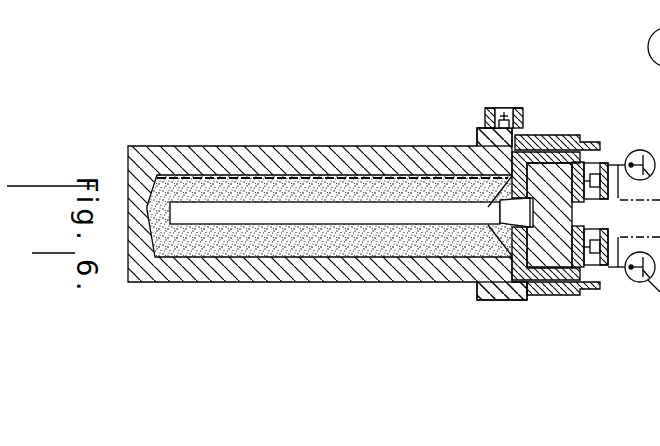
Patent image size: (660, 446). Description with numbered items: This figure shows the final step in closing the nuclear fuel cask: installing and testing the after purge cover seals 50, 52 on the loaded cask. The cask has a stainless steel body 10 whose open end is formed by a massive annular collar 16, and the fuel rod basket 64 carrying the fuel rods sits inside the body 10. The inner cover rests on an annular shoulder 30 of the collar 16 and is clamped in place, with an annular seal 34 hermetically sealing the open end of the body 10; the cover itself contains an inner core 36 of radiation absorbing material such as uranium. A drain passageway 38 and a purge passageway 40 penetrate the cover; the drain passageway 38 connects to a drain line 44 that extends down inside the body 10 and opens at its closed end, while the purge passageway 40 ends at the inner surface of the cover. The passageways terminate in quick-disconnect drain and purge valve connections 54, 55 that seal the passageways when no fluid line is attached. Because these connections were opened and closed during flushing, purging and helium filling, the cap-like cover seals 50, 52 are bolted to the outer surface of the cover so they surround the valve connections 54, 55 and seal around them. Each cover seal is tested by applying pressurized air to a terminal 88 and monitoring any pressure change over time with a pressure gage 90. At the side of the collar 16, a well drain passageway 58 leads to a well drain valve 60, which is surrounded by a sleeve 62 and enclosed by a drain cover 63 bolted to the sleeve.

The body 10 is at (507, 322).
The collar 16 is at (482, 300).
The shoulder 30 is at (510, 140).
The annular seal 34 is at (489, 216).
The inner core 36 is at (501, 217).
The drain passageway 38 is at (576, 151).
The purge passageway 40 is at (557, 296).
The drain line 44 is at (402, 175).
The after purge cover seal 50 is at (608, 190).
The after purge cover seal 52 is at (623, 216).
The drain valve connection 54 is at (594, 162).
The purge valve connection 55 is at (588, 296).
The well drain passageway 58 is at (530, 134).
The well drain valve 60 is at (503, 108).
The sleeve 62 is at (485, 124).
The drain cover 63 is at (518, 110).
The fuel rod basket 64 is at (408, 215).
The terminal 88 is at (617, 163).
The pressure gage 90 is at (647, 153).